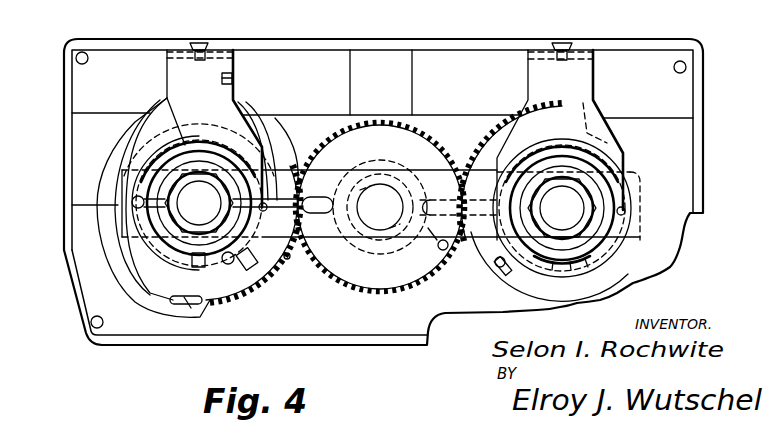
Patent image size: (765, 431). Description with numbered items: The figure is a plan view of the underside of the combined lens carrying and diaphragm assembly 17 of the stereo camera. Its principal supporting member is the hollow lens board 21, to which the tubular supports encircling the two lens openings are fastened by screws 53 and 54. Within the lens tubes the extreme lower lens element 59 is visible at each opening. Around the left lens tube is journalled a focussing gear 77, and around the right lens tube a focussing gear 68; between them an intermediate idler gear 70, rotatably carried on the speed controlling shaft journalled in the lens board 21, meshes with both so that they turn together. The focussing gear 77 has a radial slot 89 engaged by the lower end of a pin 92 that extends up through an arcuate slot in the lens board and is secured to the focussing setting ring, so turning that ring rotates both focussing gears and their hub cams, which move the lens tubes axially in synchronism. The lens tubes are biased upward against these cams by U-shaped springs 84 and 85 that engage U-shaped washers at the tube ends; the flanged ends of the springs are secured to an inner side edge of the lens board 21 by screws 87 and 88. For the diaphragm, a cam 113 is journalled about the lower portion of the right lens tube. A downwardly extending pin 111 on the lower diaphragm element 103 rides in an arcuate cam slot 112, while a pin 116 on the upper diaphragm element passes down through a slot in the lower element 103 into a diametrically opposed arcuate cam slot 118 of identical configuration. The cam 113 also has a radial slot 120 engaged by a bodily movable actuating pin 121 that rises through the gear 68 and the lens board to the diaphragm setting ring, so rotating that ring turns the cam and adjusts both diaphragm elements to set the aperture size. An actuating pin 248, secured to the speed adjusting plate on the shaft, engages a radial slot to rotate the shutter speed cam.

The combined lens carrying and diaphragm assembly 17 is at (98, 255).
The lens board 21 is at (677, 94).
The screw 53 is at (594, 152).
The screw 54 is at (140, 283).
The lower lens element 59 is at (193, 193).
The focussing gear 68 is at (293, 152).
The intermediate idler gear 70 is at (420, 143).
The focussing gear 77 is at (487, 134).
The U-shaped spring 84 is at (577, 74).
The U-shaped spring 85 is at (228, 70).
The screw 87 is at (562, 43).
The screw 88 is at (200, 43).
The radial slot 89 is at (495, 263).
The pin 92 is at (498, 275).
The lower diaphragm element 103 is at (122, 172).
The pin 111 is at (122, 203).
The arcuate cam slot 112 is at (173, 302).
The cam 113 is at (288, 260).
The pin 116 is at (401, 194).
The arcuate cam slot 118 is at (276, 141).
The radial slot 120 is at (247, 272).
The actuating pin 121 is at (262, 270).
The actuating pin 248 is at (436, 250).